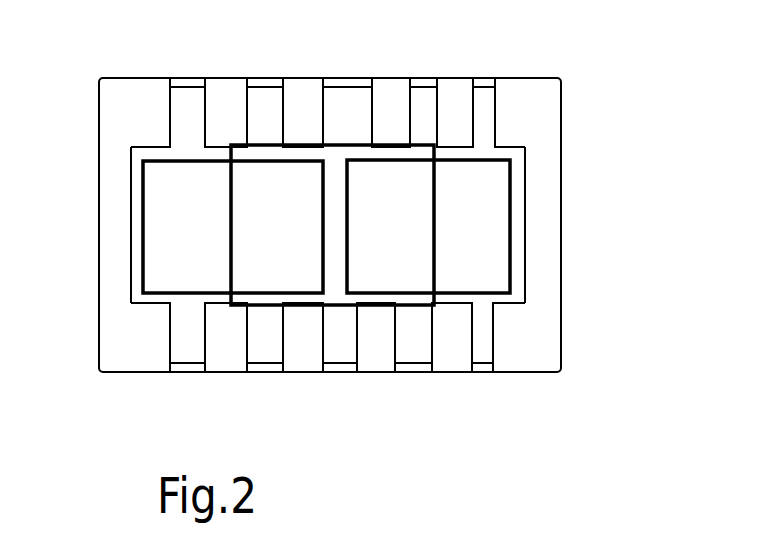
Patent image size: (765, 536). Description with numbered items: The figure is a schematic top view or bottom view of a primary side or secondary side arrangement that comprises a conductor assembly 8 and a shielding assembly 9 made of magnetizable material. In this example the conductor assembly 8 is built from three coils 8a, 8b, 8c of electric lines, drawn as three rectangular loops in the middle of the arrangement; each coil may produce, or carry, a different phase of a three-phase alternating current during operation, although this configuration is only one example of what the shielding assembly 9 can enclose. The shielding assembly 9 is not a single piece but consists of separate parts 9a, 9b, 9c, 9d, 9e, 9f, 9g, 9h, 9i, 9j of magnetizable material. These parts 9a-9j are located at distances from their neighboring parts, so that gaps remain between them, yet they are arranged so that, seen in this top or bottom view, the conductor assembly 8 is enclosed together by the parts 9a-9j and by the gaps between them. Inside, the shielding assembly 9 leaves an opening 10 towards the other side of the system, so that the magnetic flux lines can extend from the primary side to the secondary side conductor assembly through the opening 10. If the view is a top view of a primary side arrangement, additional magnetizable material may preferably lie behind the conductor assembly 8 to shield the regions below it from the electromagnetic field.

The conductor assembly 8 is at (328, 245).
The coil 8a is at (348, 248).
The coil 8b is at (233, 223).
The coil 8c is at (146, 247).
The shielding assembly 9 is at (631, 164).
The part of magnetizable material 9a is at (561, 115).
The part of magnetizable material 9b is at (450, 372).
The part of magnetizable material 9c is at (373, 372).
The part of magnetizable material 9d is at (298, 372).
The part of magnetizable material 9e is at (220, 372).
The part of magnetizable material 9f is at (98, 115).
The part of magnetizable material 9g is at (228, 77).
The part of magnetizable material 9h is at (302, 77).
The part of magnetizable material 9i is at (392, 78).
The part of magnetizable material 9j is at (455, 78).
The opening 10 is at (152, 187).